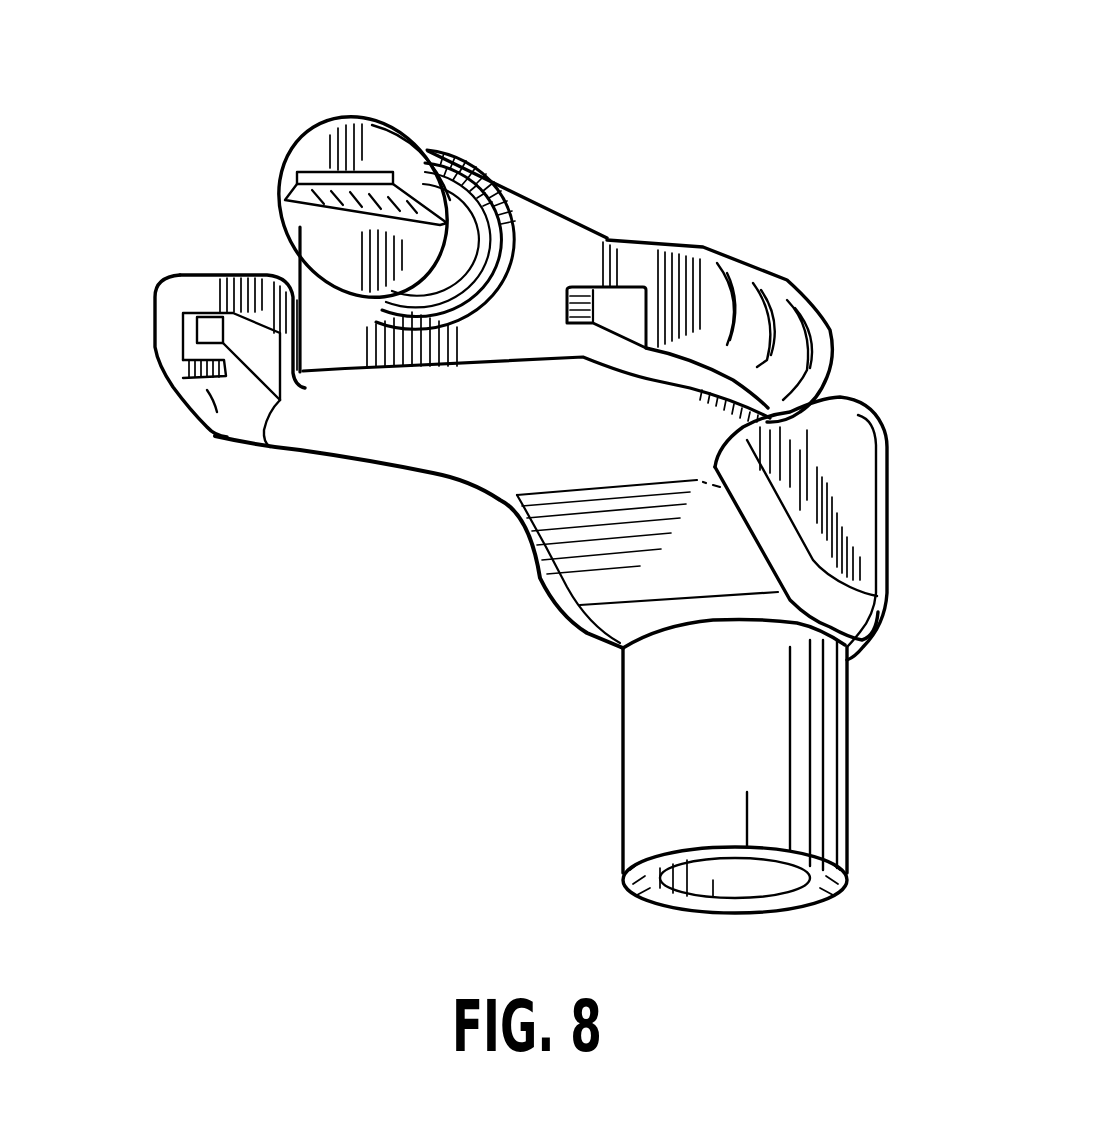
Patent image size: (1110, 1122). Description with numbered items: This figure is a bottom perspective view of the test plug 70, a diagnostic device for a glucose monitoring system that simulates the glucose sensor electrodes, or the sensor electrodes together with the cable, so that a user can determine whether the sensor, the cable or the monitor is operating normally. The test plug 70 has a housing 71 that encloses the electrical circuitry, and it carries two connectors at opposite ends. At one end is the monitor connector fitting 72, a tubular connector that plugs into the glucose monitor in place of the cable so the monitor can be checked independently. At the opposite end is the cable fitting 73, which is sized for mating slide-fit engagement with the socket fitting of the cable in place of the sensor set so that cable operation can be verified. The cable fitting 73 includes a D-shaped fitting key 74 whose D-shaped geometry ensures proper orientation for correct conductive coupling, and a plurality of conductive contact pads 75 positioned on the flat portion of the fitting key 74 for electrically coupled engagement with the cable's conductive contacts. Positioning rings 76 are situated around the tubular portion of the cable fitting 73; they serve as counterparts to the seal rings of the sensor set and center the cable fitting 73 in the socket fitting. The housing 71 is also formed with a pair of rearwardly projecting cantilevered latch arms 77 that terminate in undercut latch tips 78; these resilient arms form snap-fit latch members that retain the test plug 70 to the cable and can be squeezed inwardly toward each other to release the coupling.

The test plug 70 is at (318, 536).
The housing 71 is at (853, 388).
The monitor connector fitting 72 is at (827, 797).
The cable fitting 73 is at (424, 110).
The D-shaped fitting key 74 is at (317, 145).
The conductive contact pads 75 is at (284, 229).
The positioning rings 76 is at (520, 253).
The cantilevered latch arms 77 is at (168, 333).
The undercut latch tips 78 is at (620, 303).